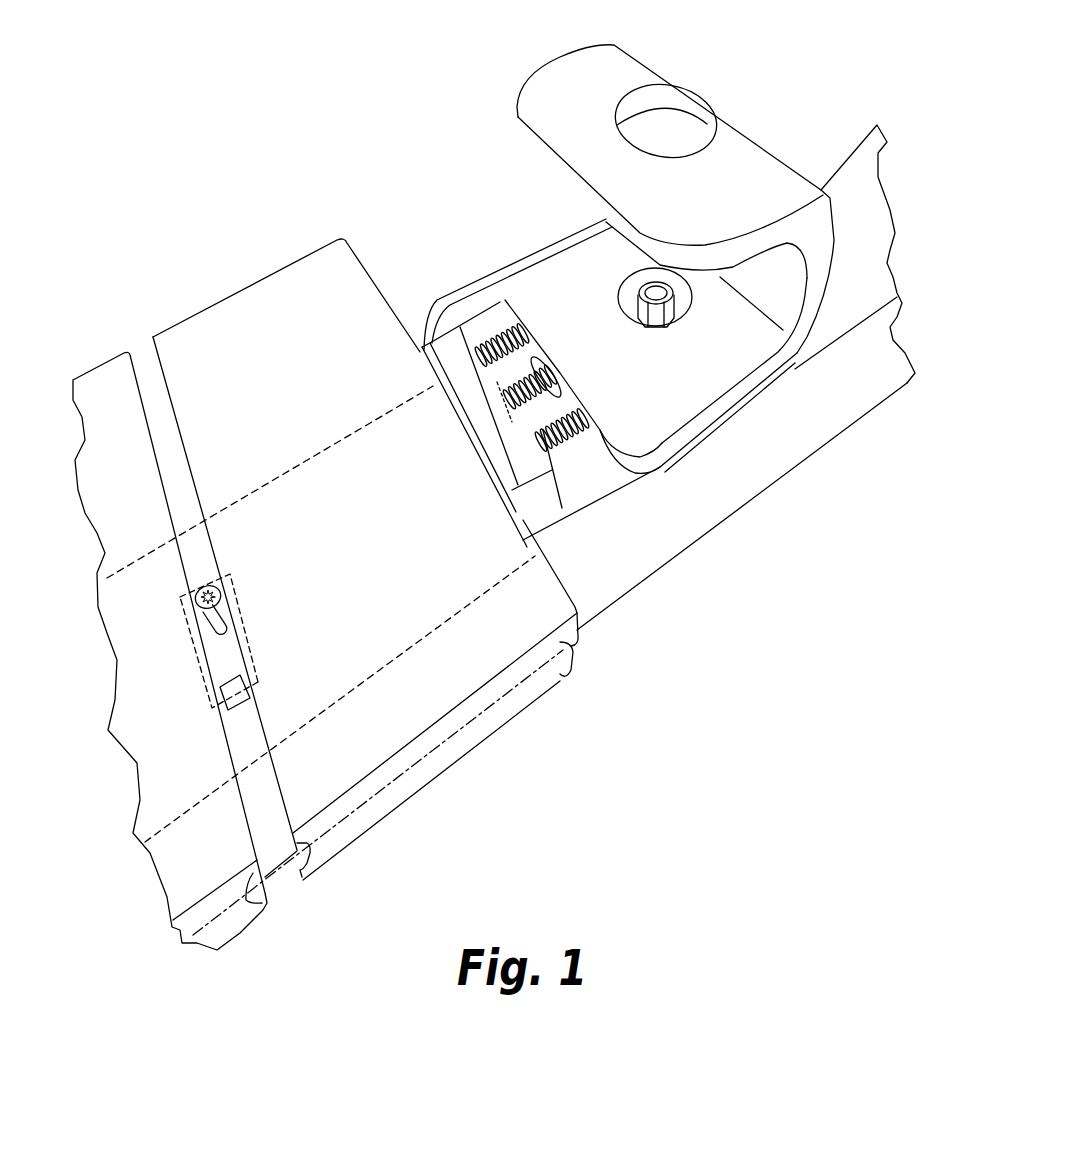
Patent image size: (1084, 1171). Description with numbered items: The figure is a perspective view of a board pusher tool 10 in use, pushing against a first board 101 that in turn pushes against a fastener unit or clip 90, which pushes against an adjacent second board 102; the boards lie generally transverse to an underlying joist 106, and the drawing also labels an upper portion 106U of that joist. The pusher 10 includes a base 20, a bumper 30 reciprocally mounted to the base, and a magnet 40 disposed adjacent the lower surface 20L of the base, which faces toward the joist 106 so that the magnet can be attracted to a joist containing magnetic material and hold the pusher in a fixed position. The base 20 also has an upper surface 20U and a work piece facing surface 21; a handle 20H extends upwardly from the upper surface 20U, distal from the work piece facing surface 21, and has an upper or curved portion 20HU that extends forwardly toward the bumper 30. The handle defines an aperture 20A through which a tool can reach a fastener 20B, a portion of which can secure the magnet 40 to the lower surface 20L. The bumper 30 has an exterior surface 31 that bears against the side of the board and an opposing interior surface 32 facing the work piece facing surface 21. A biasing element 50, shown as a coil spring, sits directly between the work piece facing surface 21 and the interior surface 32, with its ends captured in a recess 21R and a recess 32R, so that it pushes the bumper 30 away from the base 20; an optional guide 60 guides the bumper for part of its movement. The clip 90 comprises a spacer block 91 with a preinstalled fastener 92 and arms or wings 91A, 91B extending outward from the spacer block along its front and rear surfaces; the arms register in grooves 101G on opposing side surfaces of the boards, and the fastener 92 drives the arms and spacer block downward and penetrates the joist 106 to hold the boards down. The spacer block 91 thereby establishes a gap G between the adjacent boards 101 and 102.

The board pusher tool 10 is at (524, 38).
The base 20 is at (643, 292).
The aperture 20A is at (669, 99).
The fastener 20B is at (655, 308).
The handle 20H is at (767, 170).
The upper curved portion 20HU is at (730, 185).
The lower surface 20L is at (693, 440).
The upper surface 20U is at (751, 348).
The work piece facing surface 21 is at (571, 410).
The recess 21R is at (545, 390).
The bumper 30 is at (516, 431).
The exterior surface 31 is at (491, 479).
The interior surface 32 is at (536, 429).
The recess 32R is at (492, 402).
The magnet 40 is at (664, 470).
The biasing element 50 is at (531, 380).
The guide 60 is at (518, 333).
The fastener unit 90 is at (209, 614).
The spacer block 91 is at (233, 702).
The arm 91A is at (212, 700).
The arm 91B is at (253, 678).
The fastener 92 is at (213, 583).
The first board 101 is at (402, 601).
The groove 101G is at (572, 638).
The second board 102 is at (122, 704).
The underlying joist 106 is at (770, 378).
The upper plate portion 106U is at (860, 281).
The gap G is at (107, 440).